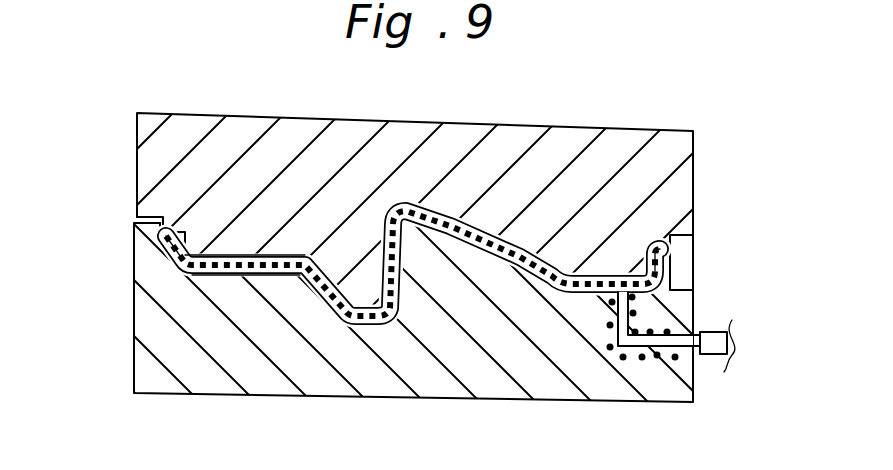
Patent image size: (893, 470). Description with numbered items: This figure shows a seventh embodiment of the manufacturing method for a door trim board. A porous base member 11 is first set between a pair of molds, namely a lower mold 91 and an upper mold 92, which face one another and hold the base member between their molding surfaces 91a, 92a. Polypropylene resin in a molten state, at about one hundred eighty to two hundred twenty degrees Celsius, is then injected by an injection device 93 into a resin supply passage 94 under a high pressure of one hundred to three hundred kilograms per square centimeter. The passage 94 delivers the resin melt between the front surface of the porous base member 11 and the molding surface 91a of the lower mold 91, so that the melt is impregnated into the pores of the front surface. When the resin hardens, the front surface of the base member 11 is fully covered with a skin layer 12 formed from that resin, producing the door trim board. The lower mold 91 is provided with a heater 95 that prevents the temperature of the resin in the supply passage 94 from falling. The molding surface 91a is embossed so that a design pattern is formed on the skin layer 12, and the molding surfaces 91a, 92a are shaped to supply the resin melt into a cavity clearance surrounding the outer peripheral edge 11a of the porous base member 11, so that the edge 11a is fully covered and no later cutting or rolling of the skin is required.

The porous base member 11 is at (484, 232).
The outer peripheral edge 11a is at (165, 236).
The skin layer 12 is at (532, 258).
The lower mold 91 is at (161, 333).
The molding surface of lower mold 91a is at (245, 252).
The upper mold 92 is at (145, 134).
The molding surface of upper mold 92a is at (178, 271).
The injection device 93 is at (718, 332).
The resin supply passage 94 is at (622, 335).
The heater 95 is at (657, 360).